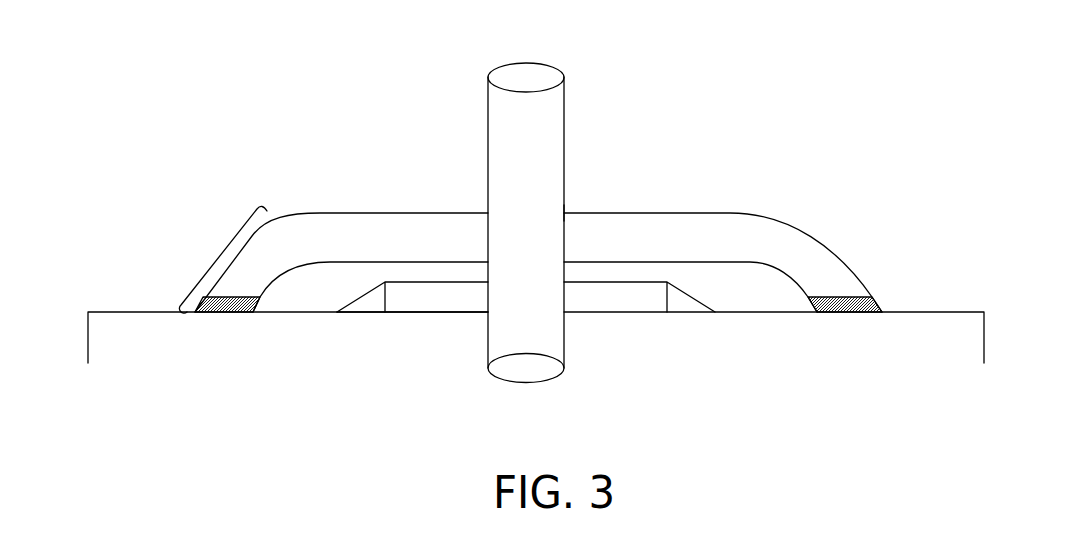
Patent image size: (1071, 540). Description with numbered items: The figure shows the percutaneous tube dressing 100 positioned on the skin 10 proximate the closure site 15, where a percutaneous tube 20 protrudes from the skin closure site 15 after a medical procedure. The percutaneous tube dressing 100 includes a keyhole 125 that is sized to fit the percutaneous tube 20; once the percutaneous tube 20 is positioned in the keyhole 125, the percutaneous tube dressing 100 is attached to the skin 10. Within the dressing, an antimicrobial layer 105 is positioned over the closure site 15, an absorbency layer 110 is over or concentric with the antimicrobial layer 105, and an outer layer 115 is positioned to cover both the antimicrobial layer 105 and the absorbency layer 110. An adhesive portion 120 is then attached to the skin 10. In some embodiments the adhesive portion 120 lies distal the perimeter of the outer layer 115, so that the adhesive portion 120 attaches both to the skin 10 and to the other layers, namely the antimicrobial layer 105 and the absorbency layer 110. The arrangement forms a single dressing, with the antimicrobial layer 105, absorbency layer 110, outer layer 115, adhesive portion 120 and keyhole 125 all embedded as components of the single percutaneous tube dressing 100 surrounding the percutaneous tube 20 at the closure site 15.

The skin 10 is at (96, 308).
The closure site 15 is at (483, 313).
The percutaneous tube 20 is at (543, 87).
The percutaneous tube dressing 100 is at (222, 250).
The antimicrobial layer 105 is at (630, 307).
The absorbency layer 110 is at (778, 278).
The outer layer 115 is at (710, 228).
The adhesive portion 120 is at (842, 312).
The keyhole 125 is at (566, 209).